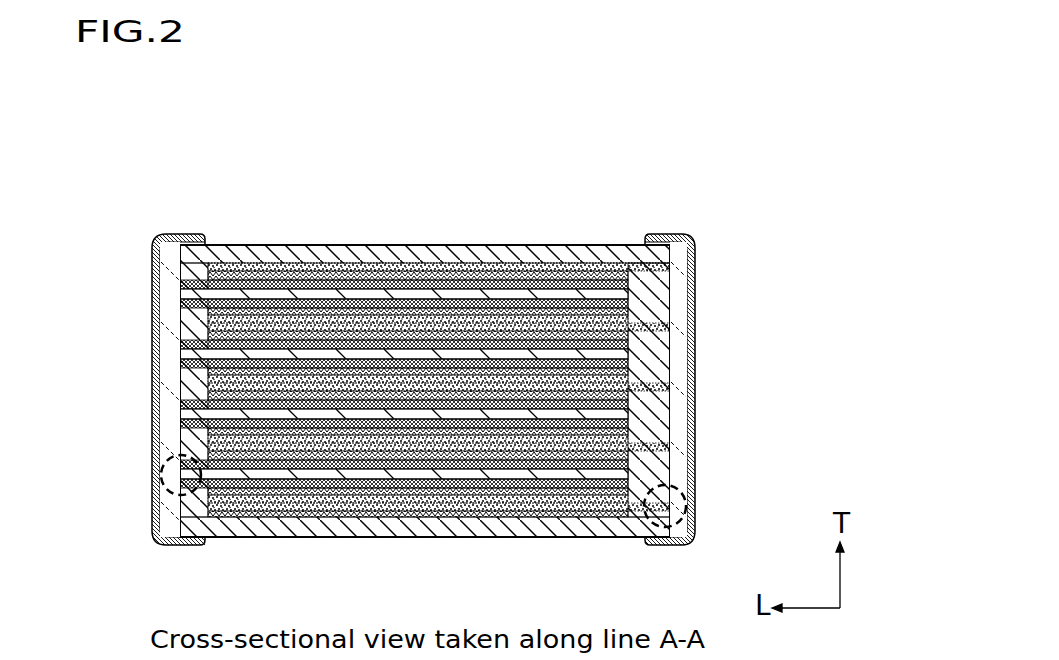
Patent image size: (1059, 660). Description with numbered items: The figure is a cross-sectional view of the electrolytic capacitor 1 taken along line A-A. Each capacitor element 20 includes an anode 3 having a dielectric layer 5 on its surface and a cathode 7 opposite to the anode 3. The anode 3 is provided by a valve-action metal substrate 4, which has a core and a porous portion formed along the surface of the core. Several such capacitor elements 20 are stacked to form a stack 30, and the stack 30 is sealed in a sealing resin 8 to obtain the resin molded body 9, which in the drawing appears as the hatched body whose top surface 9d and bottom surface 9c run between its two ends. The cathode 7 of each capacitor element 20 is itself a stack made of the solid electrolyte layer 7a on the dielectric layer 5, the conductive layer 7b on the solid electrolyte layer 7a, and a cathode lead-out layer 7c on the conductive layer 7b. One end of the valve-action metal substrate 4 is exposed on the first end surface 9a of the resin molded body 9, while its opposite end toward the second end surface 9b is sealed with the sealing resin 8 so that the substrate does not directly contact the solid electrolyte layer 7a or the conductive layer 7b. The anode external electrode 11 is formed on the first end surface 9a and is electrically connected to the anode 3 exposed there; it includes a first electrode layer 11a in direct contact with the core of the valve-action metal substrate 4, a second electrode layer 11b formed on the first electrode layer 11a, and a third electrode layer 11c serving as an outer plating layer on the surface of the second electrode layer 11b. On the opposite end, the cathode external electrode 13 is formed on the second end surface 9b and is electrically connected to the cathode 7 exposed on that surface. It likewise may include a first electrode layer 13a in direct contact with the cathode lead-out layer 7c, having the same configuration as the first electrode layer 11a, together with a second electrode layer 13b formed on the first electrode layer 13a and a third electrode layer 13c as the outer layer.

The electrolytic capacitor 1 is at (688, 138).
The anode 3 is at (275, 167).
The valve-action metal substrate 4 is at (271, 280).
The dielectric layer 5 is at (318, 294).
The cathode 7 is at (443, 167).
The solid electrolyte layer 7a is at (364, 288).
The conductive layer 7b is at (400, 294).
The cathode lead-out layer 7c is at (440, 302).
The sealing resin 8 is at (489, 262).
The resin molded body 9 is at (601, 238).
The first end surface 9a is at (179, 278).
The second end surface 9b is at (671, 290).
The bottom surface 9c is at (397, 538).
The top surface 9d is at (522, 245).
The anode external electrode 11 is at (158, 229).
The first electrode layer 11a is at (161, 352).
The second electrode layer 11b is at (171, 393).
The third electrode layer 11c is at (158, 474).
The cathode external electrode 13 is at (693, 224).
The first electrode layer 13a is at (688, 377).
The second electrode layer 13b is at (680, 403).
The third electrode layer 13c is at (697, 467).
The capacitor element 20 is at (403, 128).
The stack 30 is at (548, 256).